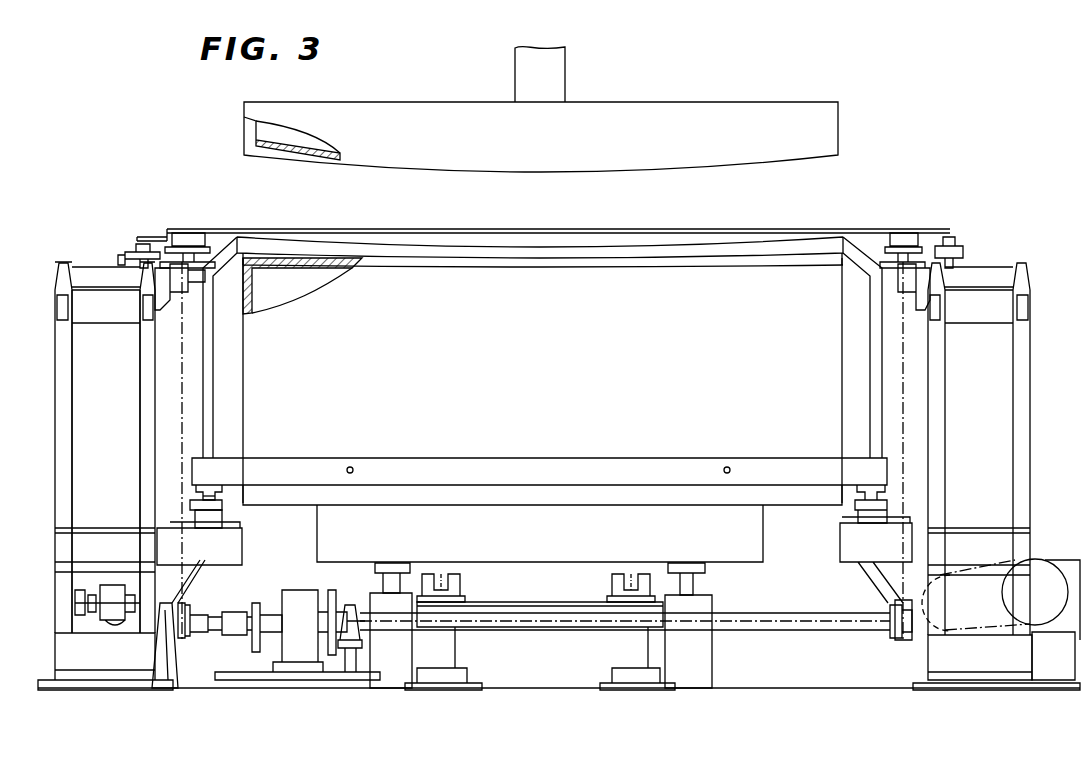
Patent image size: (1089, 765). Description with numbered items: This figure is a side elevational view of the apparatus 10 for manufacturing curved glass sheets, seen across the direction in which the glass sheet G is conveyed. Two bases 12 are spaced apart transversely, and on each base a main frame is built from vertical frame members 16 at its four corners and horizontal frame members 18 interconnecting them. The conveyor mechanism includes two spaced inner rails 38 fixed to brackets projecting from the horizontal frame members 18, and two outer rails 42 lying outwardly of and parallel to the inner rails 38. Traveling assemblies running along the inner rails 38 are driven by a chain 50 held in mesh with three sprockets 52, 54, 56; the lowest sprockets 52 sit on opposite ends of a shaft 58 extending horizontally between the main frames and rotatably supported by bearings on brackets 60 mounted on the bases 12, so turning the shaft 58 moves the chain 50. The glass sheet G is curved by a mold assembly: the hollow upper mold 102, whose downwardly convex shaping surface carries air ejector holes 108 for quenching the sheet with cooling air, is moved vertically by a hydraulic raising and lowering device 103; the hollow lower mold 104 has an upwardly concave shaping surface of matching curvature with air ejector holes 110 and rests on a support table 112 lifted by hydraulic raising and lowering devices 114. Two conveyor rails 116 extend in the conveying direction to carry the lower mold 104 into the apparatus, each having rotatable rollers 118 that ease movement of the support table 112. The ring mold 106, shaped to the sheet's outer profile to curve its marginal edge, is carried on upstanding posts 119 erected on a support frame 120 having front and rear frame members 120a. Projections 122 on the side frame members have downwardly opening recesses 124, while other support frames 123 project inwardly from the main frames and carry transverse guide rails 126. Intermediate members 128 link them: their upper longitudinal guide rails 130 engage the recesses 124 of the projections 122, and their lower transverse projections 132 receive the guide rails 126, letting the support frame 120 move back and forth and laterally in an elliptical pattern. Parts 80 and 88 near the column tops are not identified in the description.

The apparatus 10 is at (571, 724).
The base 12 is at (962, 655).
The vertical frame member 16 is at (67, 431).
The horizontal frame member 18 is at (98, 318).
The inner rail 38 is at (125, 252).
The outer rail 42 is at (195, 246).
The chain 50 is at (182, 420).
The sprocket 52 is at (183, 610).
The sprocket 54 is at (188, 290).
The sprocket 56 is at (198, 588).
The shaft 58 is at (755, 628).
The bracket 60 is at (175, 640).
The bracket 80 is at (876, 230).
The column cap 88 is at (100, 262).
The upper mold 102 is at (845, 143).
The hydraulic raising and lowering device 103 is at (560, 88).
The lower mold 104 is at (770, 275).
The ring mold 106 is at (660, 243).
The air ejector hole 108 is at (268, 160).
The air ejector hole 110 is at (330, 266).
The support table 112 is at (508, 548).
The hydraulic raising and lowering device 114 is at (692, 668).
The conveyor rail 116 is at (698, 585).
The rotatable roller 118 is at (630, 590).
The upstanding post 119 is at (215, 352).
The support frame 120 is at (640, 475).
The front and rear frame member 120a is at (455, 475).
The projection 122 is at (210, 492).
The support frame 123 is at (125, 548).
The recess 124 is at (195, 502).
The transverse guide rail 126 is at (845, 528).
The intermediate member 128 is at (192, 508).
The upper longitudinal guide rail 130 is at (862, 497).
The lower transverse projection 132 is at (222, 515).
The glass sheet G is at (505, 230).